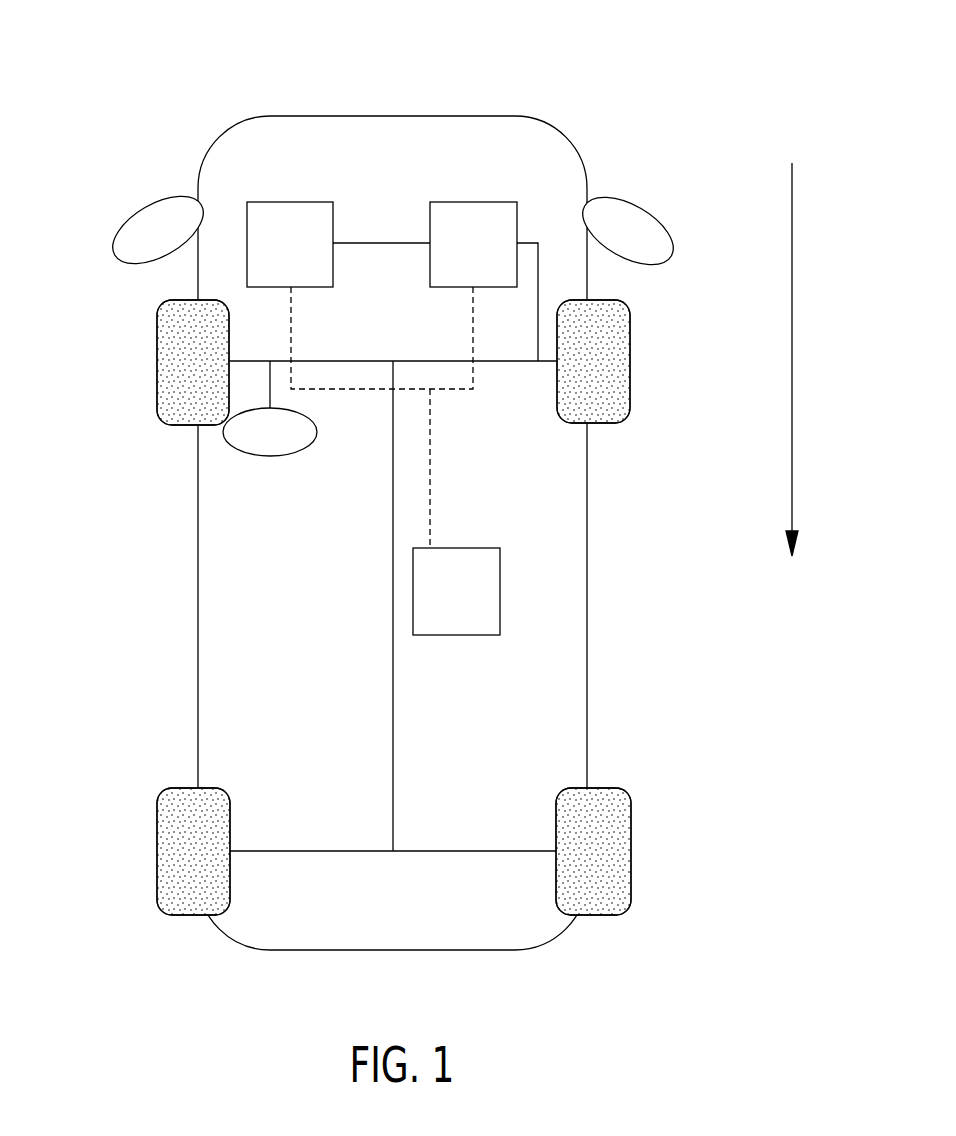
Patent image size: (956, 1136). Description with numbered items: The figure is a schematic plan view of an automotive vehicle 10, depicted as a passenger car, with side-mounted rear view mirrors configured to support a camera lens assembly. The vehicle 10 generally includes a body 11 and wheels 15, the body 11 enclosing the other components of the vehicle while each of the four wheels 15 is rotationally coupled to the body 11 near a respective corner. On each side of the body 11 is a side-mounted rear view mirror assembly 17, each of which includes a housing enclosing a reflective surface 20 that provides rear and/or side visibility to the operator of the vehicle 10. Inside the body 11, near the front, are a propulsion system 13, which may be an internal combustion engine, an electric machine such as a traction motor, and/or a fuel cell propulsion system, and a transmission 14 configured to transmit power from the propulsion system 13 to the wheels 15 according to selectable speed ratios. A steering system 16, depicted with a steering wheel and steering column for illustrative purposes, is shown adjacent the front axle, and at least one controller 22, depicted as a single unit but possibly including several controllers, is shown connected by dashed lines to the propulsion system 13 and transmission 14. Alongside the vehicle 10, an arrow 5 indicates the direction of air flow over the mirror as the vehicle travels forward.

The arrow 5 is at (793, 393).
The vehicle 10 is at (674, 89).
The body 11 is at (587, 528).
The propulsion system 13 is at (310, 202).
The transmission 14 is at (488, 202).
The wheels 15 is at (157, 373).
The steering system 16 is at (265, 456).
The side-mounted rear view mirror assembly 17 is at (136, 211).
The reflective surface 20 is at (126, 263).
The controller 22 is at (457, 548).